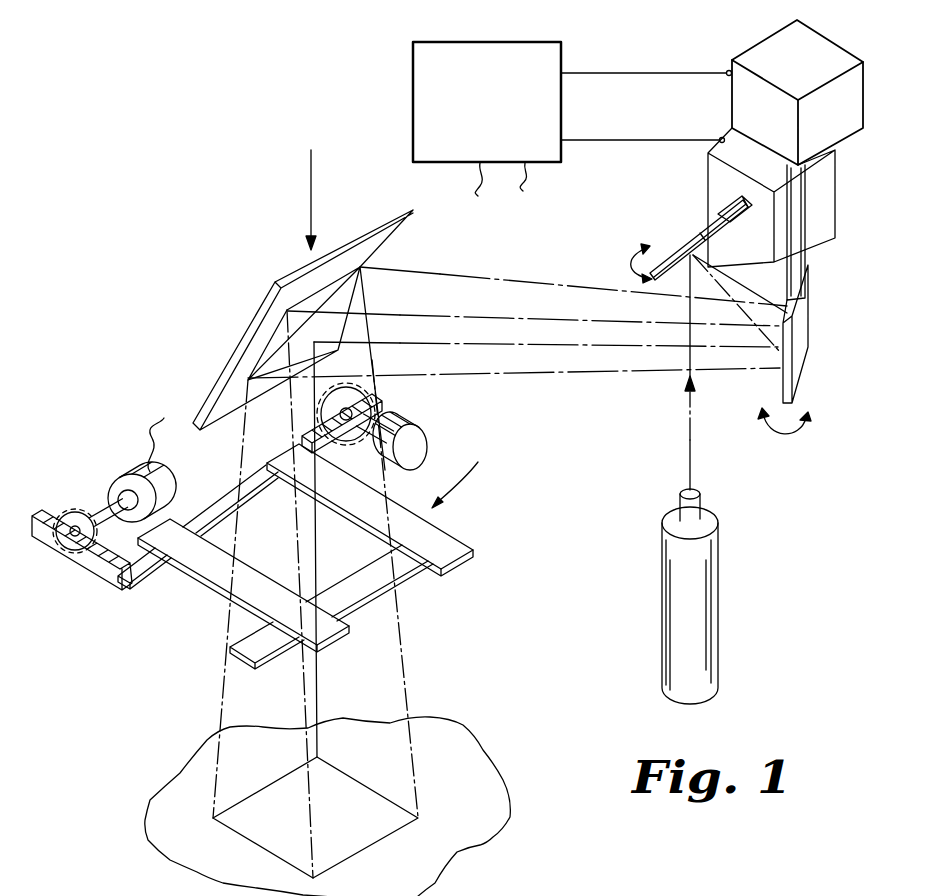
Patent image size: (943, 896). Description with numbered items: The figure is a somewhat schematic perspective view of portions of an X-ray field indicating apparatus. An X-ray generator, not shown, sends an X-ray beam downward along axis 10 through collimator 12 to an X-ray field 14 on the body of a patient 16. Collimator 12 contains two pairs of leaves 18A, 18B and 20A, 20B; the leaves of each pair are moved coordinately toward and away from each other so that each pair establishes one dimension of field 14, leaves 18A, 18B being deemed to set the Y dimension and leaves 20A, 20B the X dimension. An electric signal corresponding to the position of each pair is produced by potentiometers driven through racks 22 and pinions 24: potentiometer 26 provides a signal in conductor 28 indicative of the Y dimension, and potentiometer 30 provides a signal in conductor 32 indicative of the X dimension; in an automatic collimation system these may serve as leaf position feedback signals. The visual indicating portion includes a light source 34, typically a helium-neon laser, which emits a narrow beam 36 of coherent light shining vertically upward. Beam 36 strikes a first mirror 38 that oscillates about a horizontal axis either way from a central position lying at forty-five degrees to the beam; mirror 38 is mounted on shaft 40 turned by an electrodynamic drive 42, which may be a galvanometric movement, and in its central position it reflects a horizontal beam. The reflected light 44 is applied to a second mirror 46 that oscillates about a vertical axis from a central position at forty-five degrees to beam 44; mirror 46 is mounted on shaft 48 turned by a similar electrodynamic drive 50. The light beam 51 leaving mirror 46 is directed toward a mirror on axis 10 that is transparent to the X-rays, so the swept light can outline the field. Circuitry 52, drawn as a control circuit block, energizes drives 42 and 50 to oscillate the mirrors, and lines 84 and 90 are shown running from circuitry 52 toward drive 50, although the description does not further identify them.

The axis 10 is at (313, 193).
The collimator 12 is at (468, 481).
The X-ray field 14 is at (357, 858).
The patient 16 is at (492, 840).
The leaf 18A is at (442, 540).
The leaf 18B is at (223, 597).
The leaf 20A is at (404, 571).
The leaf 20B is at (230, 512).
The rack 22 is at (332, 452).
The pinion 24 is at (80, 507).
The potentiometer 26 is at (405, 420).
The conductor 28 is at (427, 447).
The potentiometer 30 is at (157, 488).
The conductor 32 is at (484, 188).
The light source 34 is at (718, 574).
The beam 36 is at (693, 419).
The first mirror 38 is at (683, 247).
The shaft 40 is at (738, 200).
The electrodynamic drive 42 is at (818, 218).
The reflected light 44 is at (742, 288).
The second mirror 46 is at (800, 369).
The shaft 48 is at (803, 186).
The electrodynamic drive 50 is at (771, 47).
The light beam 51 is at (548, 373).
The circuitry 52 is at (515, 41).
The control line 84 is at (622, 72).
The control line 90 is at (607, 140).